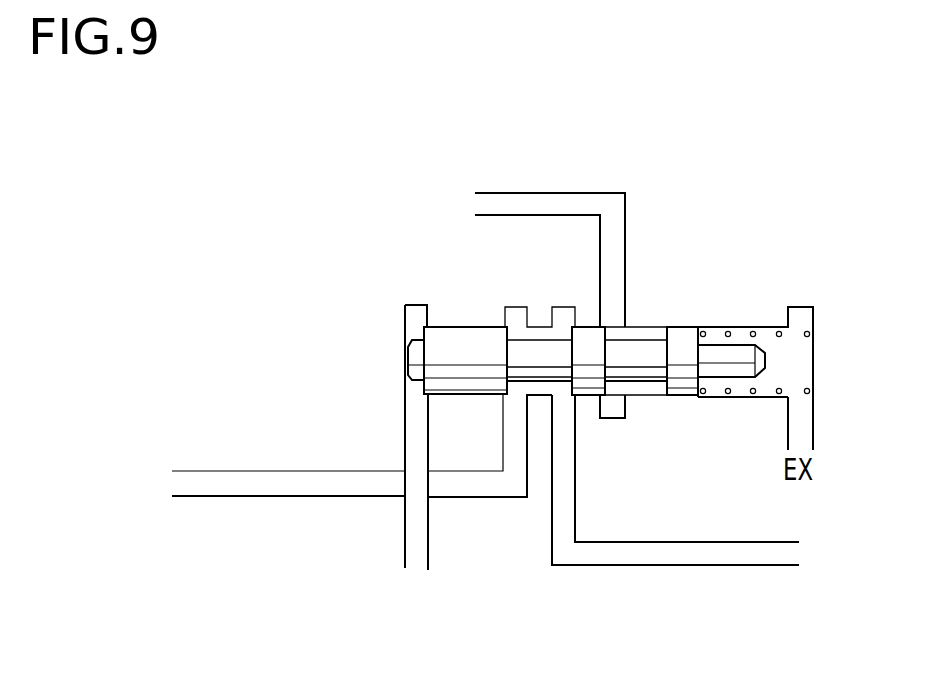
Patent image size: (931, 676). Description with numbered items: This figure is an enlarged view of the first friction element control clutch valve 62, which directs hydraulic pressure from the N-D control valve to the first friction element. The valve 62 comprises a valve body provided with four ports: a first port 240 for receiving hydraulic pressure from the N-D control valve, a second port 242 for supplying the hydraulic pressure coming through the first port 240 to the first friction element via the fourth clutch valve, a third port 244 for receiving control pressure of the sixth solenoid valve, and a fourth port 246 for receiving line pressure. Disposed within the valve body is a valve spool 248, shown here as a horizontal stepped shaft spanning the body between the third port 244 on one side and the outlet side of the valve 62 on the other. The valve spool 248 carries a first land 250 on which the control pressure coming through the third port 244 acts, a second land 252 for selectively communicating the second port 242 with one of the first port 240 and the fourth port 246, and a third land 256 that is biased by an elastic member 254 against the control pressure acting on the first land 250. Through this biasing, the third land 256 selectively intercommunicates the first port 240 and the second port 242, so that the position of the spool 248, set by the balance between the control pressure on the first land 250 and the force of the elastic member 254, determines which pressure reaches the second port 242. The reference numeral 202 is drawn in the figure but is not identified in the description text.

The first port 240 is at (623, 286).
The second port 242 is at (570, 492).
The third port 244 is at (405, 422).
The fourth port 246 is at (506, 428).
The first land 250 is at (466, 330).
The bolt 202 is at (637, 383).
The second land 252 is at (588, 330).
The elastic member 254 is at (682, 390).
The third land 256 is at (752, 332).
The valve spool 248 is at (765, 362).
The first friction element control clutch valve 62 is at (815, 375).